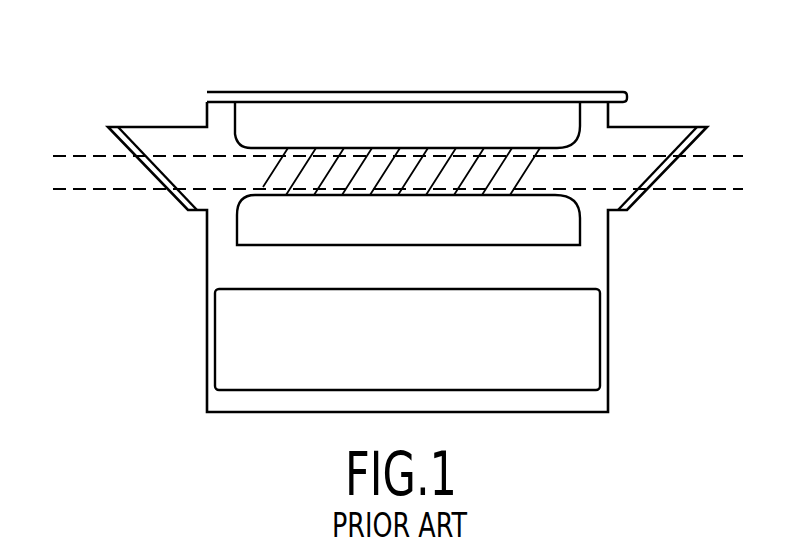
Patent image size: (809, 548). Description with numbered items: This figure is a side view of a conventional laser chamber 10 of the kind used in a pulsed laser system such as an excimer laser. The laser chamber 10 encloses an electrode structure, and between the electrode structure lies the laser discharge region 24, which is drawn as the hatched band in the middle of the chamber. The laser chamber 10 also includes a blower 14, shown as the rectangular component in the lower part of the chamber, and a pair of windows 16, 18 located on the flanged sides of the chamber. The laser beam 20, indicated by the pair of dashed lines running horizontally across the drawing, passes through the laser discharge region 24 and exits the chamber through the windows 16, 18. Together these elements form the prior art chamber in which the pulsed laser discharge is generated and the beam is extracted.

The laser chamber 10 is at (600, 80).
The blower 14 is at (589, 357).
The window 16 is at (645, 196).
The window 18 is at (170, 191).
The laser beam 20 is at (93, 190).
The laser discharge region 24 is at (400, 172).